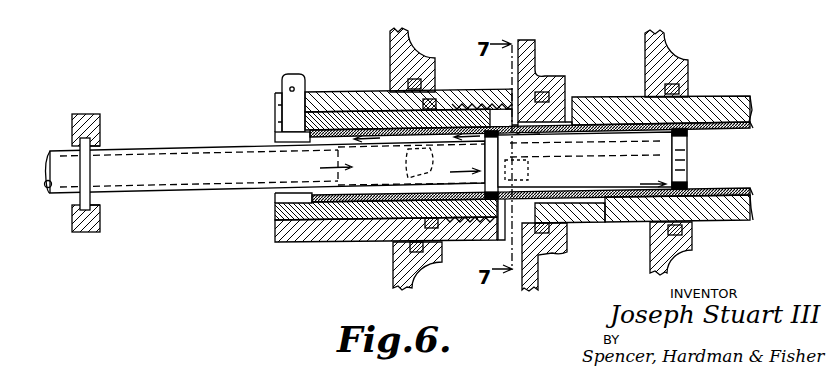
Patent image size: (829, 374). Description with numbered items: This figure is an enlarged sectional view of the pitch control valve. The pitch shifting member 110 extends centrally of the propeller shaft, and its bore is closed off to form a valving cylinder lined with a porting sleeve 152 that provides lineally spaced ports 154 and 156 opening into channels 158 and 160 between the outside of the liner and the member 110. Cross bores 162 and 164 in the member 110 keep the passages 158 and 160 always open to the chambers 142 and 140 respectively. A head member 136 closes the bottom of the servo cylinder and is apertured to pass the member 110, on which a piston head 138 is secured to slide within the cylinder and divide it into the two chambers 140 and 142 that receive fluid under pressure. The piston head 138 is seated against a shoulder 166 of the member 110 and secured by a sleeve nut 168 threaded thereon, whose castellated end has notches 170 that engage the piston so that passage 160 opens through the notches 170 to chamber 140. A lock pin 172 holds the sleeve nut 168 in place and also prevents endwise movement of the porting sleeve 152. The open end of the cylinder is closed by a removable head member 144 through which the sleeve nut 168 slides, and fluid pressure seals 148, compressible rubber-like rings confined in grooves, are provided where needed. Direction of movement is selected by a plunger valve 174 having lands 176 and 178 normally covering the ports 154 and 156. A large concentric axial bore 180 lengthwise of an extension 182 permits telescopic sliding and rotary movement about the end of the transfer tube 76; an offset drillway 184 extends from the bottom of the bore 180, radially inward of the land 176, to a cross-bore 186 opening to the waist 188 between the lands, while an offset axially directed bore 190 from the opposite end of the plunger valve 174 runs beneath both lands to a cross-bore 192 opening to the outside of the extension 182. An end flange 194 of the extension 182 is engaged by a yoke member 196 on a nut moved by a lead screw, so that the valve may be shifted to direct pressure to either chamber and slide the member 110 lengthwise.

The transfer tube 76 is at (66, 186).
The pitch shifting member 110 is at (749, 221).
The head member 136 is at (666, 33).
The piston head 138 is at (540, 74).
The chamber 140 is at (457, 52).
The chamber 142 is at (600, 56).
The head member 144 is at (400, 44).
The fluid pressure seals 148 is at (424, 104).
The porting sleeve 152 is at (744, 190).
The port 154 is at (490, 130).
The port 156 is at (688, 185).
The channel 158 is at (522, 118).
The channel 160 is at (605, 226).
The cross bore 162 is at (576, 102).
The cross bore 164 is at (532, 262).
The shoulder 166 is at (573, 226).
The sleeve nut 168 is at (357, 233).
The notches 170 is at (524, 60).
The lock pin 172 is at (285, 88).
The plunger valve 174 is at (636, 224).
The land 176 is at (500, 208).
The land 178 is at (688, 164).
The axial bore 180 is at (346, 180).
The extension 182 is at (245, 191).
The offset drillway 184 is at (432, 162).
The cross-bore 186 is at (530, 173).
The waist 188 is at (655, 132).
The offset axially directed bore 190 is at (685, 103).
The cross-bore 192 is at (455, 95).
The end flange 194 is at (88, 163).
The yoke member 196 is at (86, 114).